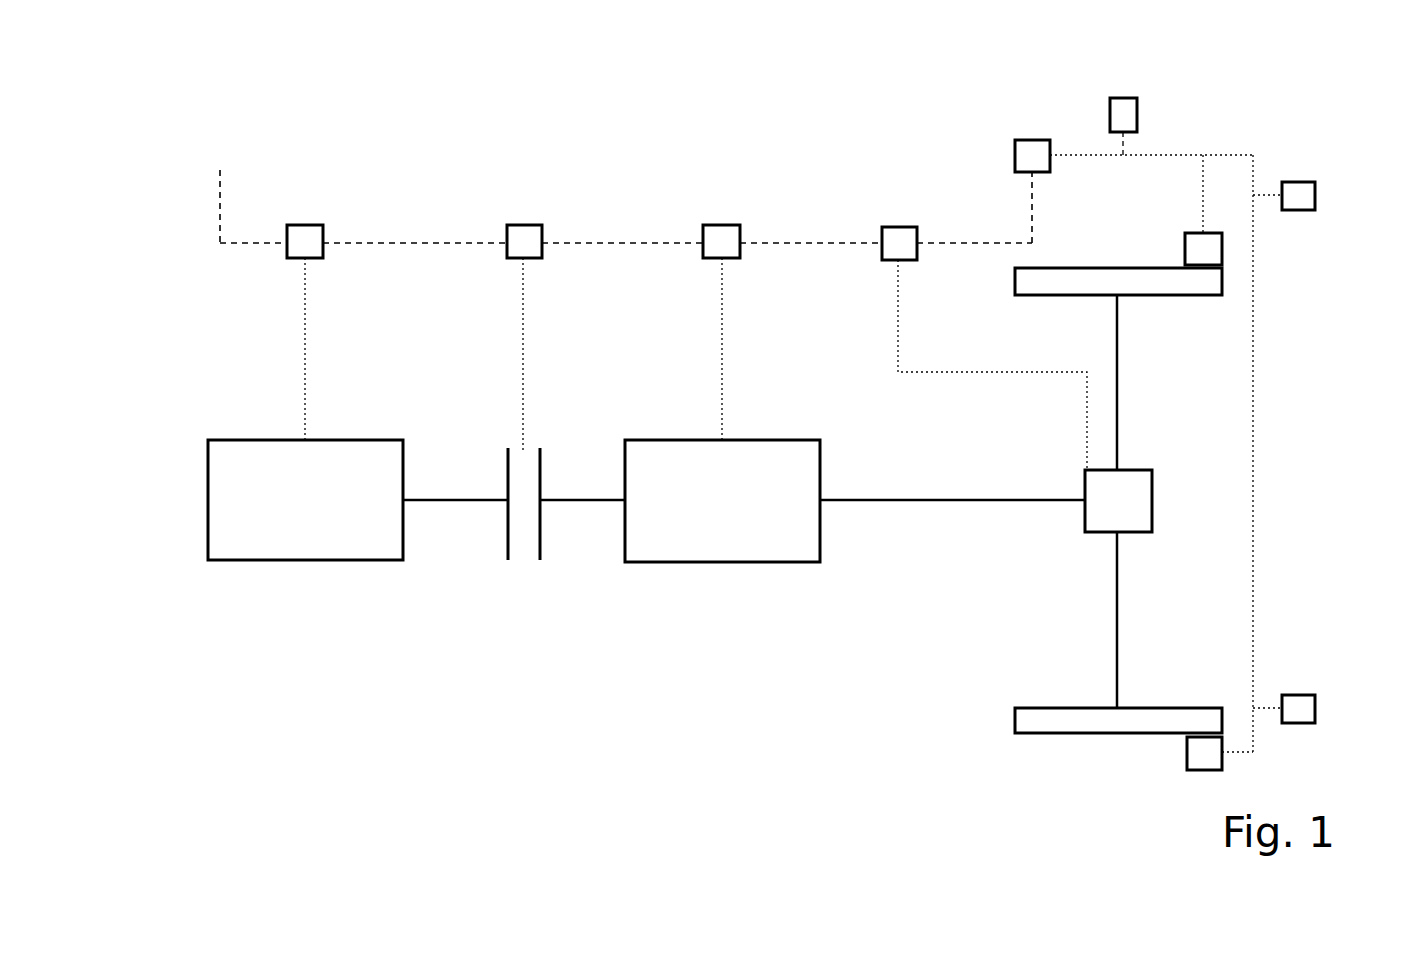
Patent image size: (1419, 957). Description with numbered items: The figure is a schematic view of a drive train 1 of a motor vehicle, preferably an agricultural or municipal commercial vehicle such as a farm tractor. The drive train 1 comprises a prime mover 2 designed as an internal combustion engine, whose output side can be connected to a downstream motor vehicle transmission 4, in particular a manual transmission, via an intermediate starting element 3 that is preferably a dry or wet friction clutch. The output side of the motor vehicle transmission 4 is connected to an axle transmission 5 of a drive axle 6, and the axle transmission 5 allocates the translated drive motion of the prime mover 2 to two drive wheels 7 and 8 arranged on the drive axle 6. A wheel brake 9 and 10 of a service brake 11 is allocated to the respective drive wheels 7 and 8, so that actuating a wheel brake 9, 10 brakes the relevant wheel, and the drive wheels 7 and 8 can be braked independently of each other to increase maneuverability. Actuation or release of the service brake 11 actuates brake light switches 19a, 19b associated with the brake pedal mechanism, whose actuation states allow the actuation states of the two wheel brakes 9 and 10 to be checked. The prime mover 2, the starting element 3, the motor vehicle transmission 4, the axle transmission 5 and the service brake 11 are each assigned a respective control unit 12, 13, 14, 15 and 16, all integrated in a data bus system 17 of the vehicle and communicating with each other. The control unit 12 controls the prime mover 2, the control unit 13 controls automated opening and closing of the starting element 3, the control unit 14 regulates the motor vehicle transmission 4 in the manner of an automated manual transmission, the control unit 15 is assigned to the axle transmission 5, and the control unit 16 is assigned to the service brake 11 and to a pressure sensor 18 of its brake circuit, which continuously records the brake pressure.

The drive train 1 is at (303, 682).
The prime mover 2 is at (252, 530).
The starting element 3 is at (523, 542).
The motor vehicle transmission 4 is at (740, 542).
The axle transmission 5 is at (1133, 502).
The drive axle 6 is at (1115, 647).
The drive wheel 7 is at (1047, 718).
The drive wheel 8 is at (1156, 284).
The wheel brake 9 is at (1187, 747).
The wheel brake 10 is at (1205, 250).
The service brake 11 is at (1226, 131).
The control unit 12 is at (305, 240).
The control unit 13 is at (522, 240).
The control unit 14 is at (722, 240).
The control unit 15 is at (898, 240).
The control unit 16 is at (1028, 155).
The data bus system 17 is at (220, 168).
The pressure sensor 18 is at (1123, 99).
The brake light switch 19a is at (1305, 193).
The brake light switch 19b is at (1305, 707).